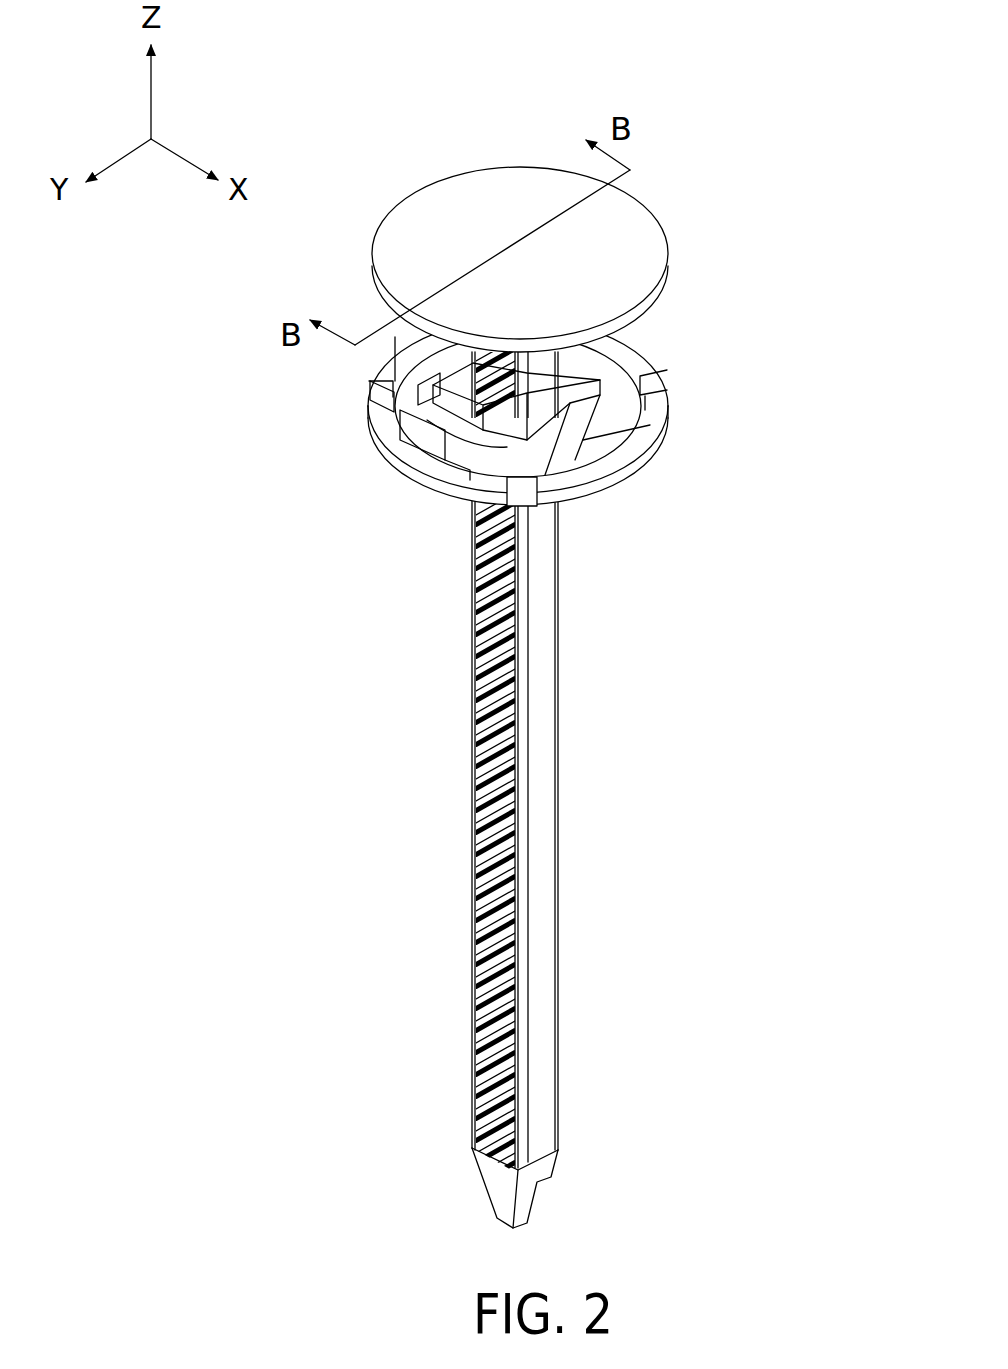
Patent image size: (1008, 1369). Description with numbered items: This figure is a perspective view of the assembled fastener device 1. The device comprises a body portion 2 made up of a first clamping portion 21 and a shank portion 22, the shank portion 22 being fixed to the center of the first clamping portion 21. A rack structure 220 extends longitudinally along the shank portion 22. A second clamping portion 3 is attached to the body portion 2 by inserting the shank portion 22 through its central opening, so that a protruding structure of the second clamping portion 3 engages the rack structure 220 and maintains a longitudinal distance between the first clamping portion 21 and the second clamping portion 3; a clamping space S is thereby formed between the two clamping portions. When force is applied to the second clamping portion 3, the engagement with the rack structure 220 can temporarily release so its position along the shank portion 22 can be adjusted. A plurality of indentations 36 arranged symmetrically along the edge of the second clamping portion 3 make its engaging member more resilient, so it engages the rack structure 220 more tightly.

The fastener device 1 is at (869, 100).
The body portion 2 is at (524, 783).
The first clamping portion 21 is at (627, 244).
The shank portion 22 is at (543, 908).
The rack structure 220 is at (478, 905).
The second clamping portion 3 is at (632, 435).
The indentations 36 is at (385, 390).
The clamping space S is at (610, 374).